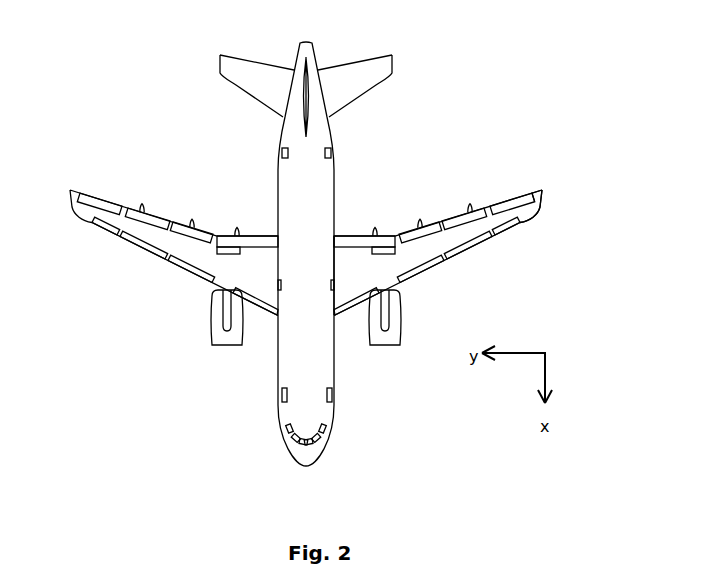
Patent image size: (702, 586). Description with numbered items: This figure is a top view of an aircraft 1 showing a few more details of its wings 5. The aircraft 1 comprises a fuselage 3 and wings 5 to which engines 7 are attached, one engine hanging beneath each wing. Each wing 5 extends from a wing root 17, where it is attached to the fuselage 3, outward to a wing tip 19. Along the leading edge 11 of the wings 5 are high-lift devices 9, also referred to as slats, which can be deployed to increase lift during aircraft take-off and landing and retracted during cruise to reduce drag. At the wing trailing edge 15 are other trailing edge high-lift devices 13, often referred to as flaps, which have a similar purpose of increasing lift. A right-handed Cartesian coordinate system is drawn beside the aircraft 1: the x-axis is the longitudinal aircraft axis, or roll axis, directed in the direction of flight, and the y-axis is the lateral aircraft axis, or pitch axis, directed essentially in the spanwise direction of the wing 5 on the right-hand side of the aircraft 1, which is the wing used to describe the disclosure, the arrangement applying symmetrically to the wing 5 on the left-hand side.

The aircraft 1 is at (472, 151).
The fuselage 3 is at (297, 193).
The wings 5 is at (203, 260).
The engines 7 is at (230, 338).
The high-lift devices 9 is at (443, 258).
The leading edge 11 is at (153, 257).
The trailing edge high-lift devices 13 is at (173, 230).
The wing trailing edge 15 is at (157, 213).
The wing root 17 is at (333, 261).
The wing tip 19 is at (543, 199).